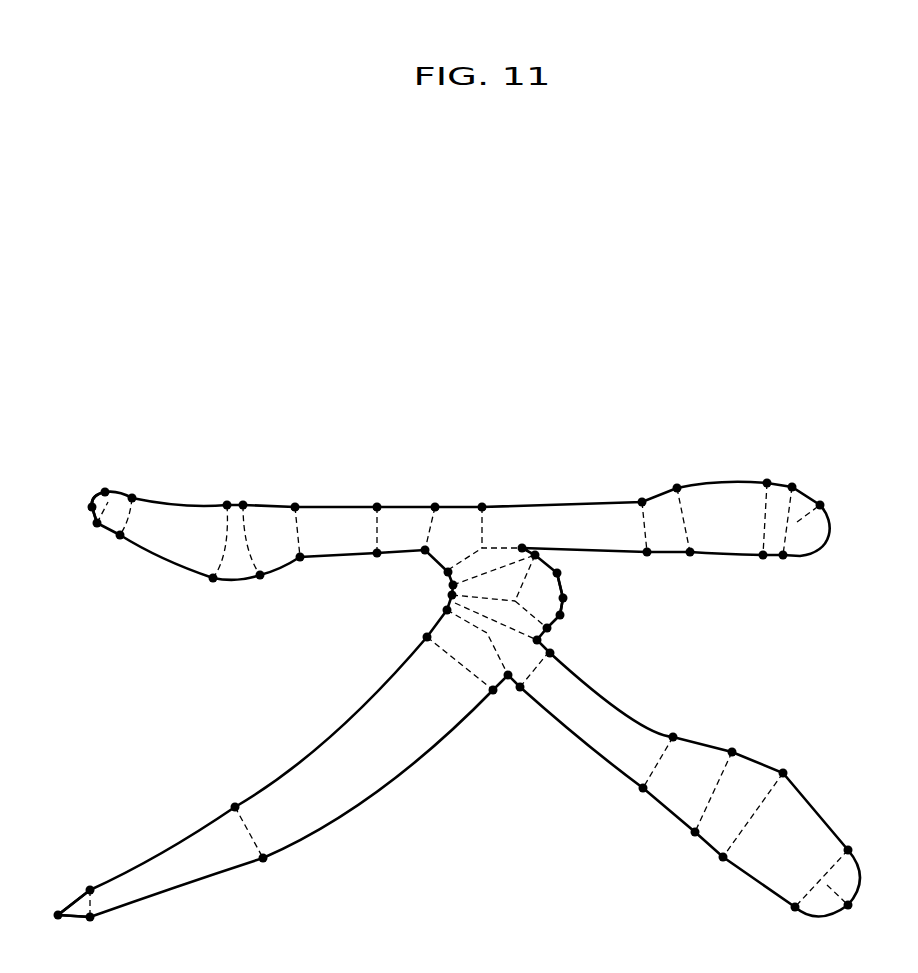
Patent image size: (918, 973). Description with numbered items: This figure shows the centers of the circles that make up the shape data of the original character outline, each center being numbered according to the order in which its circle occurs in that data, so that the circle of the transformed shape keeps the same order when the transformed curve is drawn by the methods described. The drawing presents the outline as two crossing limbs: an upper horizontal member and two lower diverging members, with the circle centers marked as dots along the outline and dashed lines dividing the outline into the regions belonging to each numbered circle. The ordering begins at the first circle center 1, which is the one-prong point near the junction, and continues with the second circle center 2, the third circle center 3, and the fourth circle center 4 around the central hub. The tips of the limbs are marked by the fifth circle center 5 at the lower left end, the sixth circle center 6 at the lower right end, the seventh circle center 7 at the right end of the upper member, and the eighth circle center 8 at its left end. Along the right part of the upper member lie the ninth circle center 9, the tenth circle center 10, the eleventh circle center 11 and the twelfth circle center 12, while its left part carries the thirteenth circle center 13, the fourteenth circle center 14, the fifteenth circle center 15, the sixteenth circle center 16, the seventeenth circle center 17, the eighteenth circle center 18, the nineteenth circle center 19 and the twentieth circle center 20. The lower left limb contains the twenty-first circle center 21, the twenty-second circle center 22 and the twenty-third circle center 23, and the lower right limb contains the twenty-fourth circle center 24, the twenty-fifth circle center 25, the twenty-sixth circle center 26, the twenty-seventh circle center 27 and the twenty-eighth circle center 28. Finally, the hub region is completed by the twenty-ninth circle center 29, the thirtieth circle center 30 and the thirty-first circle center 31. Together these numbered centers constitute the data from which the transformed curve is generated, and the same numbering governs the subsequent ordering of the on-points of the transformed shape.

The first circle center 1 is at (492, 532).
The second circle center 2 is at (477, 642).
The third circle center 3 is at (573, 594).
The fourth circle center 4 is at (493, 582).
The fifth circle center 5 is at (62, 911).
The sixth circle center 6 is at (851, 906).
The seventh circle center 7 is at (822, 504).
The eighth circle center 8 is at (81, 508).
The ninth circle center 9 is at (634, 527).
The tenth circle center 10 is at (675, 520).
The eleventh circle center 11 is at (749, 519).
The twelfth circle center 12 is at (786, 521).
The thirteenth circle center 13 is at (438, 528).
The fourteenth circle center 14 is at (380, 530).
The fifteenth circle center 15 is at (314, 532).
The sixteenth circle center 16 is at (261, 540).
The seventeenth circle center 17 is at (209, 541).
The eighteenth circle center 18 is at (144, 519).
The nineteenth circle center 19 is at (117, 500).
The twentieth circle center 20 is at (103, 491).
The twenty-first circle center 21 is at (460, 663).
The twenty-second circle center 22 is at (264, 832).
The twenty-third circle center 23 is at (113, 900).
The twenty-fourth circle center 24 is at (544, 675).
The twenty-fifth circle center 25 is at (650, 762).
The twenty-sixth circle center 26 is at (709, 792).
The twenty-seventh circle center 27 is at (753, 815).
The twenty-eighth circle center 28 is at (813, 876).
The twenty-ninth circle center 29 is at (491, 566).
The thirtieth circle center 30 is at (496, 621).
The thirty-first circle center 31 is at (534, 603).